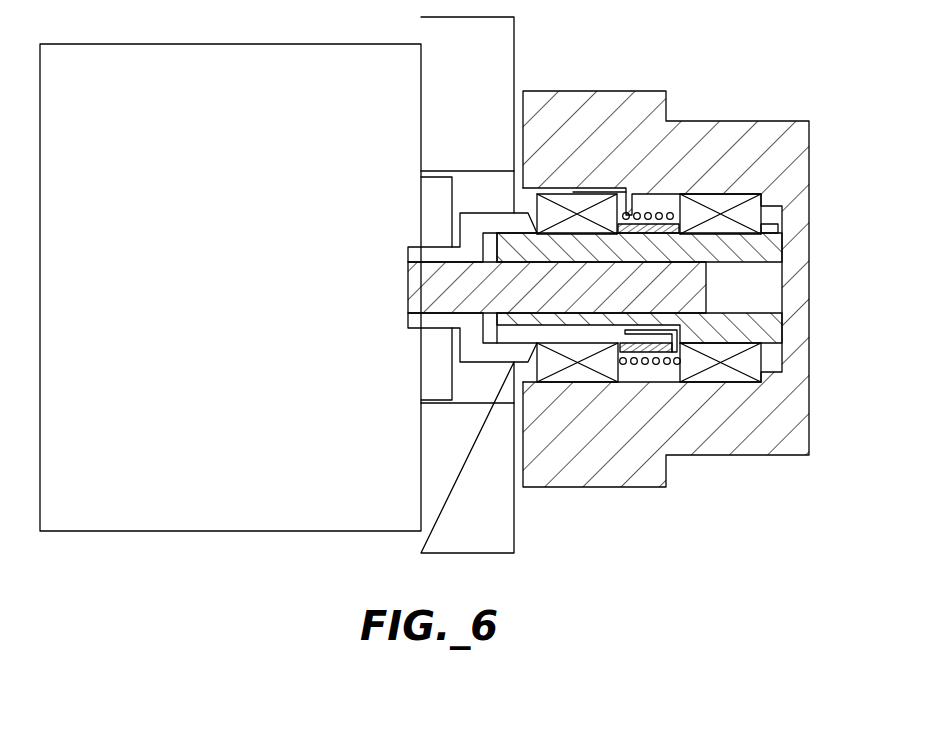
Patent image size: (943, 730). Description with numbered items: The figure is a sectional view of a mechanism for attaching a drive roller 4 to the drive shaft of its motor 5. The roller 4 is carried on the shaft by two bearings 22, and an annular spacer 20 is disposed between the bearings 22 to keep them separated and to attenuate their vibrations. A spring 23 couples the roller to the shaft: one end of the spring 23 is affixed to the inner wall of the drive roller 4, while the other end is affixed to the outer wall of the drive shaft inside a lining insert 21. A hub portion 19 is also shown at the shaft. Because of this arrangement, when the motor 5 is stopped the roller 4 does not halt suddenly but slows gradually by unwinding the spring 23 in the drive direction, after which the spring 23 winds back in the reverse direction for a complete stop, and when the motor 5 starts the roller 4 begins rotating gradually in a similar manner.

The drive roller 4 is at (580, 90).
The motor 5 is at (274, 43).
The hub 19 is at (483, 232).
The annular spacer 20 is at (668, 212).
The lining insert 21 is at (769, 250).
The bearing 22 is at (570, 383).
The spring 23 is at (670, 367).